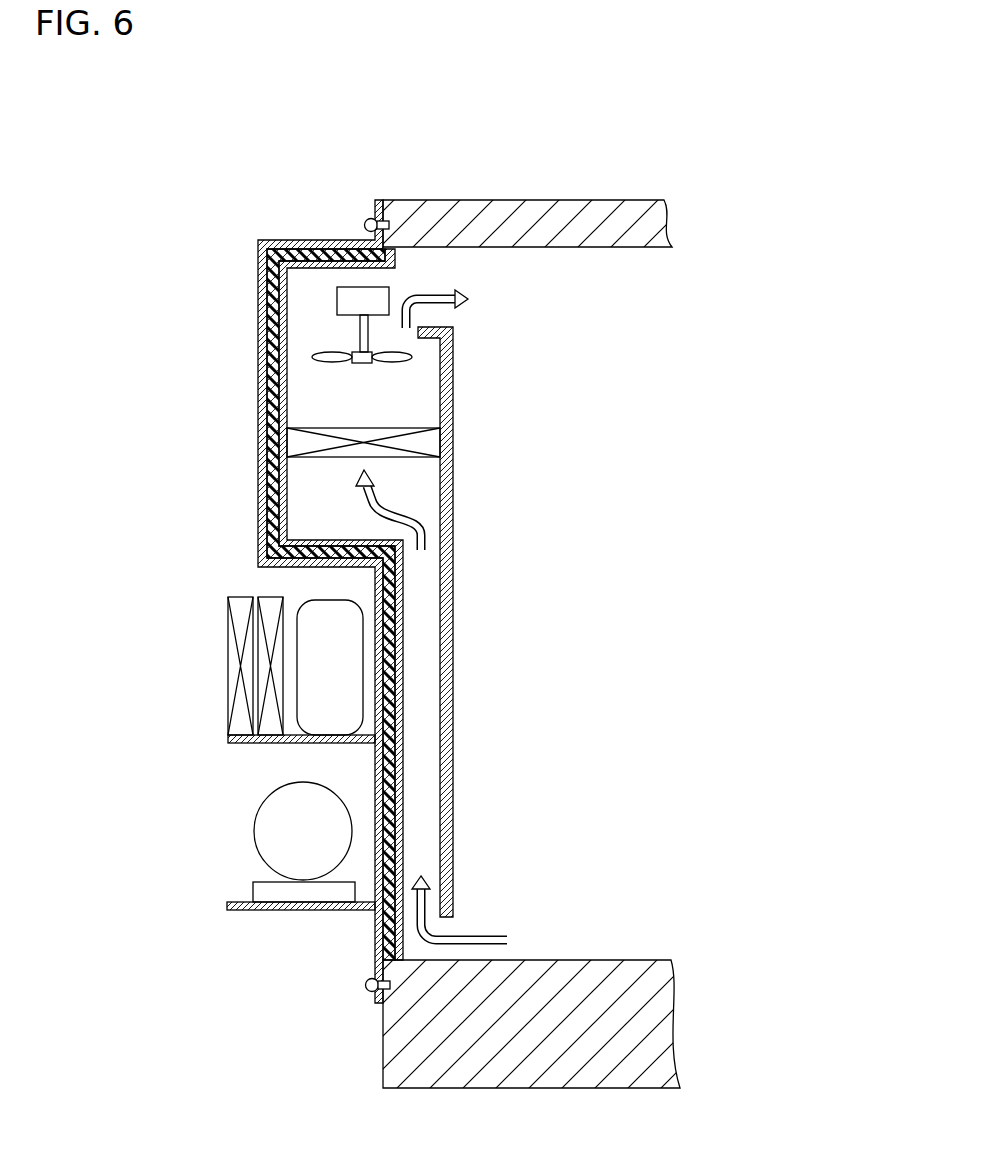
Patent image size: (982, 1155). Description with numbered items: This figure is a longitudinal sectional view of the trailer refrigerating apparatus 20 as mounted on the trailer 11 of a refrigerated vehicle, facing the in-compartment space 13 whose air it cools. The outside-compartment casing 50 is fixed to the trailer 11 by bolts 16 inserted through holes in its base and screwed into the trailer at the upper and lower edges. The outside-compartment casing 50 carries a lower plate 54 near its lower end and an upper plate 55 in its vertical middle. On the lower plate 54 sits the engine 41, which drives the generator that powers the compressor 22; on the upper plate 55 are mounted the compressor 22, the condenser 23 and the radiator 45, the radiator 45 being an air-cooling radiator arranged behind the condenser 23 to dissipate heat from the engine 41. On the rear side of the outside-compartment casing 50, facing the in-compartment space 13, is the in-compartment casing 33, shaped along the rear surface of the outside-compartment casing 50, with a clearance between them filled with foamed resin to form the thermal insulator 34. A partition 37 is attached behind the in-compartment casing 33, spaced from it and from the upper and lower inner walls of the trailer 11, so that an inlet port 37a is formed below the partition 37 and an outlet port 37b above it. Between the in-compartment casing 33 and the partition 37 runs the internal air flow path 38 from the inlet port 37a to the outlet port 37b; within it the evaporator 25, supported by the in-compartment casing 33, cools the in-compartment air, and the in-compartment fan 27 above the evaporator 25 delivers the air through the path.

The trailer 11 is at (511, 199).
The in-compartment space 13 is at (582, 658).
The bolt 16 is at (366, 223).
The trailer refrigerating apparatus 20 is at (207, 148).
The compressor 22 is at (327, 662).
The condenser 23 is at (240, 610).
The evaporator 25 is at (385, 432).
The in-compartment fan 27 is at (350, 313).
The in-compartment casing 33 is at (330, 538).
The thermal insulator 34 is at (268, 312).
The partition 37 is at (448, 560).
The inlet port 37a is at (445, 928).
The outlet port 37b is at (410, 327).
The internal air flow path 38 is at (414, 501).
The engine 41 is at (262, 829).
The radiator 45 is at (270, 603).
The outside-compartment casing 50 is at (262, 492).
The lower plate 54 is at (233, 909).
The upper plate 55 is at (237, 738).